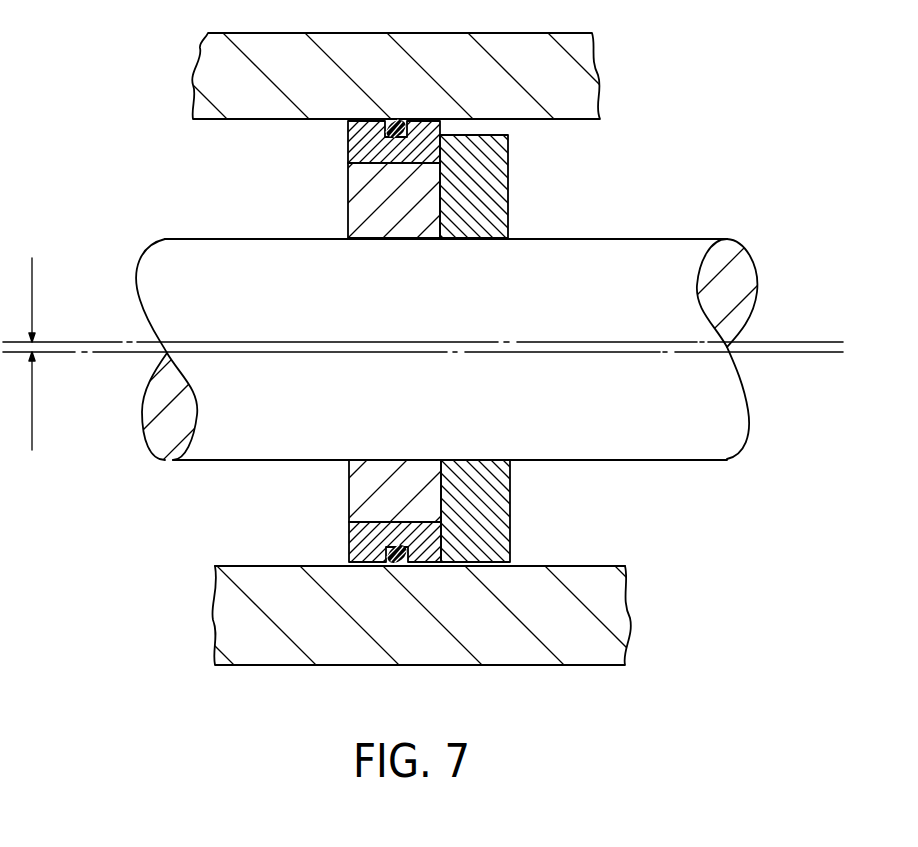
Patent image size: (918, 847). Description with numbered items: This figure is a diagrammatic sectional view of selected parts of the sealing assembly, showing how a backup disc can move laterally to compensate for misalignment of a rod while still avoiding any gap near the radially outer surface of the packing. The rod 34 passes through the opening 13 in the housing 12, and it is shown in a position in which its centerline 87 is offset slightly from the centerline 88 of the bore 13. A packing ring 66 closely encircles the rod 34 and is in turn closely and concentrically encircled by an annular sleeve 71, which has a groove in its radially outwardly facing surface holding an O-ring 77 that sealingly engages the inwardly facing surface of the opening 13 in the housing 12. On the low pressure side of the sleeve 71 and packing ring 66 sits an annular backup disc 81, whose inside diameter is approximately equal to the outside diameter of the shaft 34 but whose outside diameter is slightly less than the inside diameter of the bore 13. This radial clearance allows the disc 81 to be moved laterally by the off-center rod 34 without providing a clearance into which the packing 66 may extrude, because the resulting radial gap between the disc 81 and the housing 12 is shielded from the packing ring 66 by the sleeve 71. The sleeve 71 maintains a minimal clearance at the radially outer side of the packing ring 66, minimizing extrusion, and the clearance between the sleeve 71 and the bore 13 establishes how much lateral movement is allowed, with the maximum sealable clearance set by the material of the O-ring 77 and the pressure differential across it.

The housing 12 is at (236, 667).
The opening 13 is at (229, 566).
The rod 34 is at (665, 250).
The packing ring 66 is at (363, 202).
The sleeve 71 is at (358, 150).
The O-ring 77 is at (384, 129).
The backup disc 81 is at (492, 185).
The centerline of the rod 87 is at (68, 353).
The centerline of the bore 88 is at (70, 341).